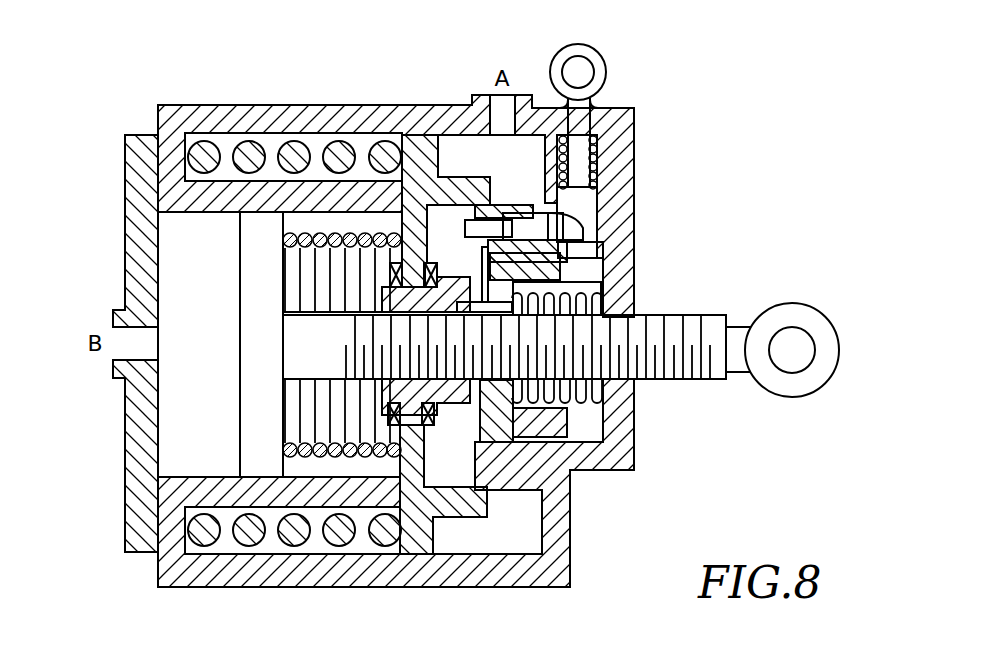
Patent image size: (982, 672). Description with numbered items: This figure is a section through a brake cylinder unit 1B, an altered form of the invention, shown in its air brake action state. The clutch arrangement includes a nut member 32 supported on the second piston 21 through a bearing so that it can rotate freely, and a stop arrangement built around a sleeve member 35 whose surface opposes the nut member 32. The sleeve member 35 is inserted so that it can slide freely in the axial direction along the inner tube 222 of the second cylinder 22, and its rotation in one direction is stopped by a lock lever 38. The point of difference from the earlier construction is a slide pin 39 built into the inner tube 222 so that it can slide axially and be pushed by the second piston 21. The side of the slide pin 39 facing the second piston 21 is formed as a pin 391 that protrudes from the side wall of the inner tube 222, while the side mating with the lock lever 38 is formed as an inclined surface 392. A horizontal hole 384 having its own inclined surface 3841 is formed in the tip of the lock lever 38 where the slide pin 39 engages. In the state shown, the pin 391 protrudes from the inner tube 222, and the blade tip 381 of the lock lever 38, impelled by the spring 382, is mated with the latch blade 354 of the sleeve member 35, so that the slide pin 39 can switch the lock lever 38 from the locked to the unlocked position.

The brake cylinder unit 1B is at (443, 357).
The second piston 21 is at (413, 152).
The second cylinder 22 is at (490, 578).
The inner tube 222 is at (530, 468).
The nut member 32 is at (398, 388).
The sleeve member 35 is at (558, 423).
The latch blade 354 is at (567, 272).
The lock lever 38 is at (608, 70).
The blade tip 381 is at (600, 258).
The spring 382 is at (599, 175).
The horizontal hole 384 is at (595, 241).
The inclined surface 3841 is at (565, 222).
The slide pin 39 is at (475, 135).
The pin 391 is at (468, 212).
The inclined surface 392 is at (550, 218).